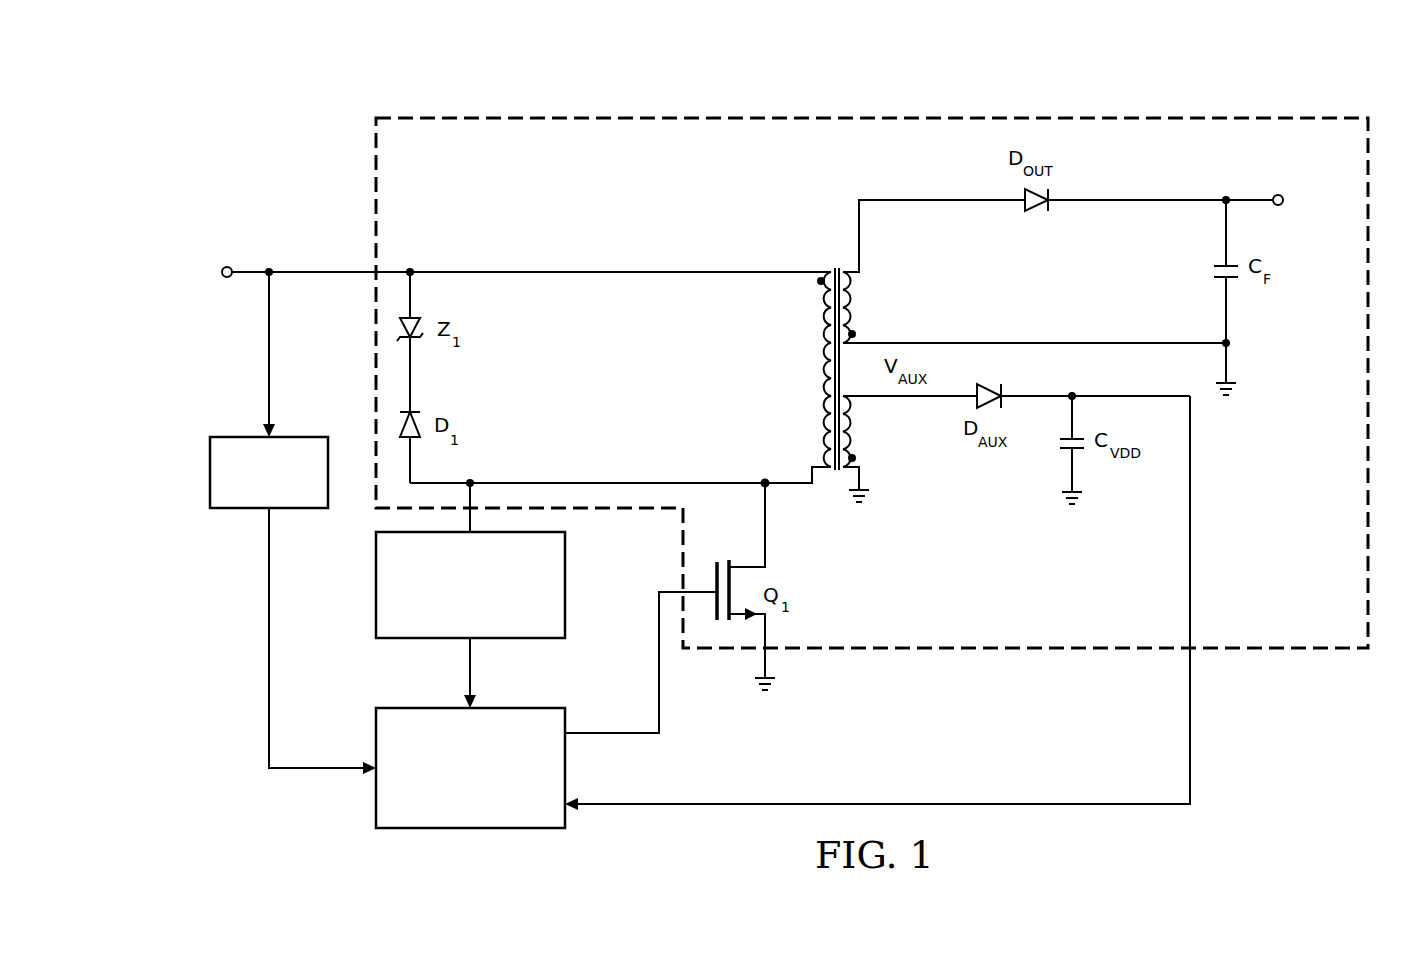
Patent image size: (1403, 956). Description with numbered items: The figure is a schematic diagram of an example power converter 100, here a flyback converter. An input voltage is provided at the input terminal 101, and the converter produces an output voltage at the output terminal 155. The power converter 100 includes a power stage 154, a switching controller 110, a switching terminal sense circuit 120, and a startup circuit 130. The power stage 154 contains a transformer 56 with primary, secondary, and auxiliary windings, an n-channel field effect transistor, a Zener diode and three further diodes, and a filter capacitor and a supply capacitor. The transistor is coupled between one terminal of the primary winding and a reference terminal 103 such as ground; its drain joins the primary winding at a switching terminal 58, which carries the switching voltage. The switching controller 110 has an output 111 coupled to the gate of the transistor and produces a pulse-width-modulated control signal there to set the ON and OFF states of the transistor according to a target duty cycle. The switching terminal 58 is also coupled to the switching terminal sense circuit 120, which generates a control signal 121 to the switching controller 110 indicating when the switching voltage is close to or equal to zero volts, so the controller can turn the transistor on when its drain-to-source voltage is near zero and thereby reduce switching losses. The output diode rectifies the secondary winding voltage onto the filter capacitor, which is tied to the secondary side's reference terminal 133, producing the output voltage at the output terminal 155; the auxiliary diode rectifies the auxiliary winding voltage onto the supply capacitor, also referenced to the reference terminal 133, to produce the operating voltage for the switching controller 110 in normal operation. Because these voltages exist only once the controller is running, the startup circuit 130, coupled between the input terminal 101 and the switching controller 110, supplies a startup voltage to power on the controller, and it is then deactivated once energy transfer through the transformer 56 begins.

The power converter 100 is at (388, 70).
The input terminal 101 is at (226, 262).
The power stage 154 is at (620, 228).
The output terminal 155 is at (1283, 192).
The transformer 56 is at (838, 262).
The switching terminal 58 is at (772, 490).
The secondary side's reference terminal 133 is at (1237, 388).
The reference terminal 103 is at (778, 684).
The startup circuit 130 is at (210, 472).
The switching terminal sense circuit 120 is at (376, 584).
The control signal 121 is at (469, 660).
The switching controller 110 is at (460, 830).
The output 111 is at (568, 738).